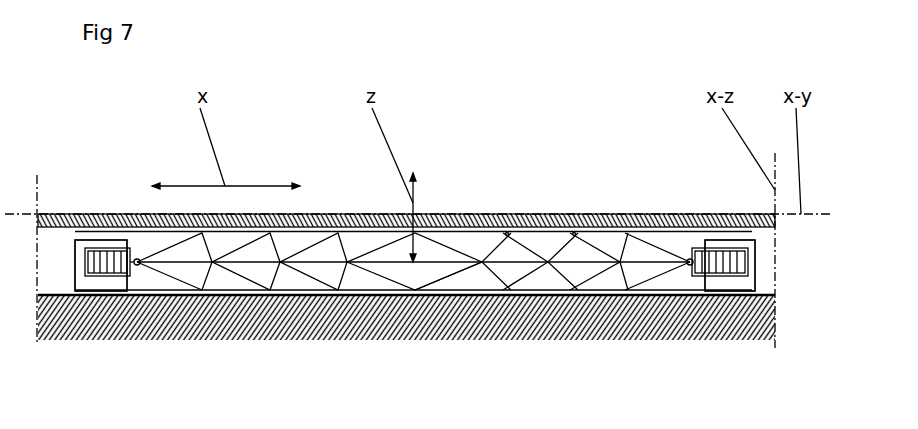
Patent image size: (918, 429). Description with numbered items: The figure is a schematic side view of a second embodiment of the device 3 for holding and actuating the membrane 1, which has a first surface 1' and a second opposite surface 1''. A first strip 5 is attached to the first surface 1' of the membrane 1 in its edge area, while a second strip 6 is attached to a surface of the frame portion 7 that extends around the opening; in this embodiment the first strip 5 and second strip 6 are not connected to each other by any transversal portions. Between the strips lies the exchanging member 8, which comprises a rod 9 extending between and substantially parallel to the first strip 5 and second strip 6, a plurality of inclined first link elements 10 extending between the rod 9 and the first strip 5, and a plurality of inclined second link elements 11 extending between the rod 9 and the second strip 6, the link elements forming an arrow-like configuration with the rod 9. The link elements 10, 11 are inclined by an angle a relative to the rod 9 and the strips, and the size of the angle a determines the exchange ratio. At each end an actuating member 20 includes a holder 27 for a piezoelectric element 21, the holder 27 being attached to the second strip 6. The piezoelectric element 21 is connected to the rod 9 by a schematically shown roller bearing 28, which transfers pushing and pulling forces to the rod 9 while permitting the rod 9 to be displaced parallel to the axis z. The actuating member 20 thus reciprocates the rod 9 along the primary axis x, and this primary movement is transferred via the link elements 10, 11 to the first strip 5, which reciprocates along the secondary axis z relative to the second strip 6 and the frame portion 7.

The membrane 1 is at (406, 156).
The first surface 1' is at (417, 149).
The second opposite surface 1'' is at (31, 292).
The device 3 is at (580, 300).
The first strip 5 is at (464, 214).
The second strip 6 is at (302, 290).
The frame portion 7 is at (480, 315).
The exchanging member 8 is at (339, 243).
The rod 9 is at (626, 233).
The first link elements 10 is at (573, 233).
The second link elements 11 is at (165, 273).
The angle a is at (442, 282).
The actuating member 20 is at (104, 238).
The piezoelectric element 21 is at (116, 280).
The holder 27 is at (93, 283).
The roller bearing 28 is at (141, 267).